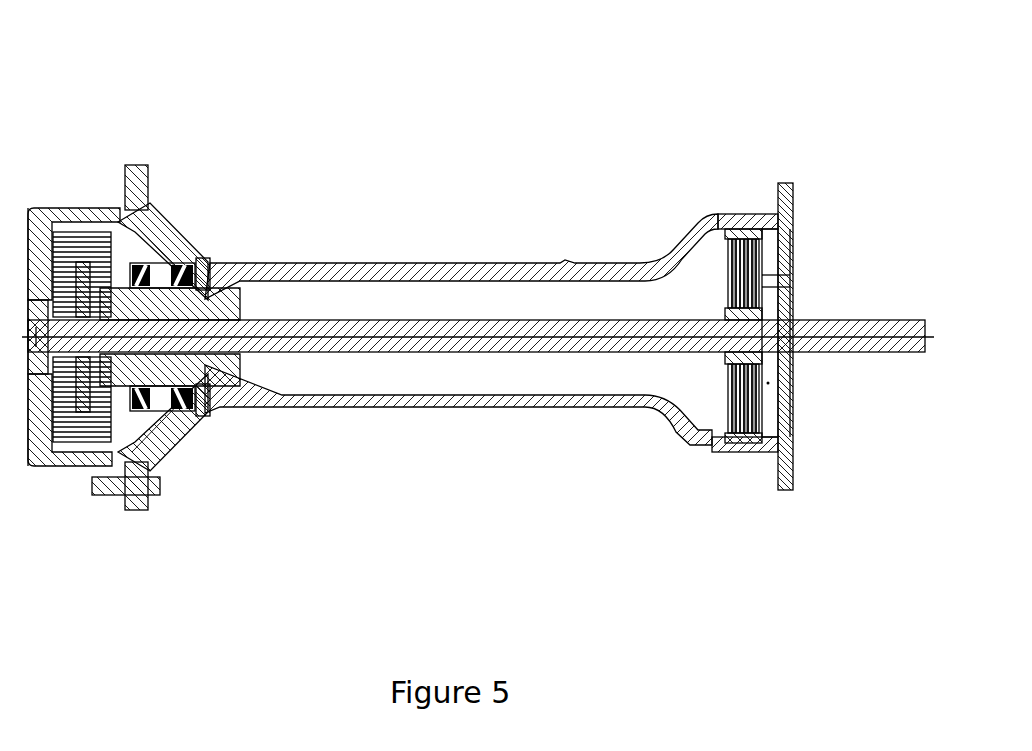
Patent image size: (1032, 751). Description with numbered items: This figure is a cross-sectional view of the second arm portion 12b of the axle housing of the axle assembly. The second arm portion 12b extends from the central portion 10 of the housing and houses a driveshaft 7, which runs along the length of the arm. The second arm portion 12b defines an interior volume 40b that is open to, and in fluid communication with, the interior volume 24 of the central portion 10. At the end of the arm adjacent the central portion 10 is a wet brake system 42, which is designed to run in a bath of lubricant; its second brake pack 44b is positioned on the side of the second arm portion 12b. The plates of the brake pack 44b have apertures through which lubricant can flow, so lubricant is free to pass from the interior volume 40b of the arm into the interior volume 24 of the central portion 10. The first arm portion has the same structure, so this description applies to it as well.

The driveshaft 7 is at (330, 354).
The central portion 10 is at (748, 188).
The second arm portion 12b is at (355, 240).
The interior volume 24 is at (771, 413).
The interior volume 40b is at (435, 367).
The wet brake system 42 is at (720, 265).
The second brake pack 44b is at (720, 388).